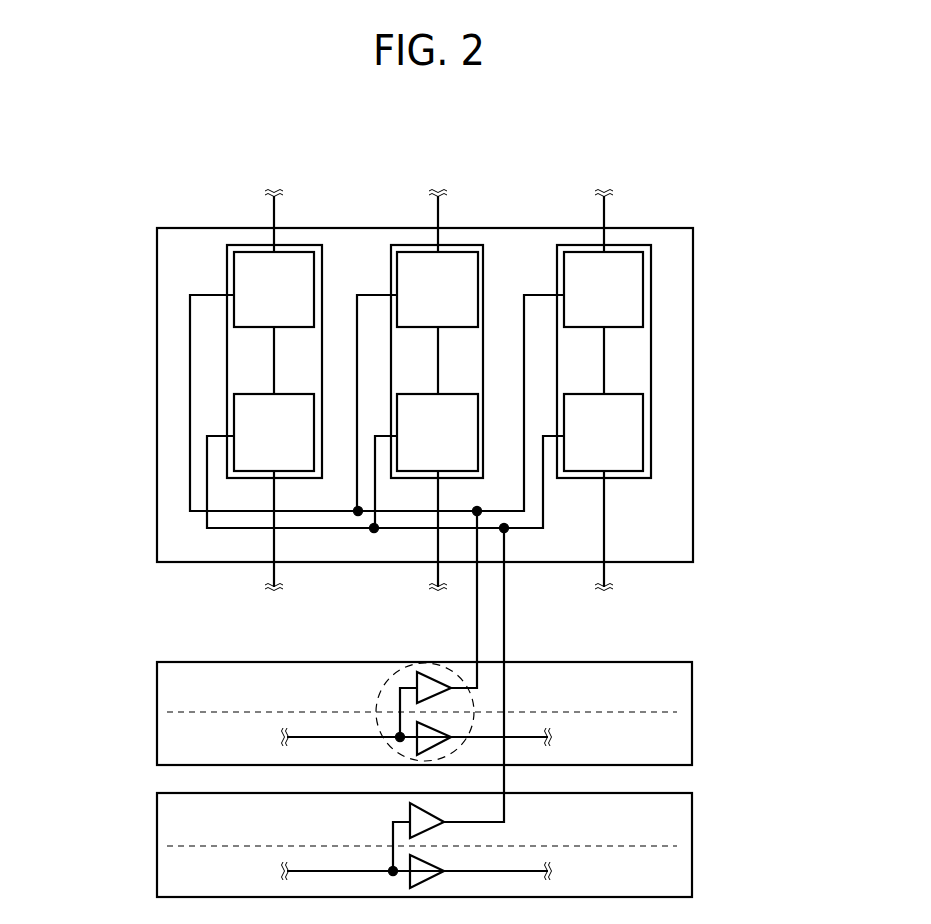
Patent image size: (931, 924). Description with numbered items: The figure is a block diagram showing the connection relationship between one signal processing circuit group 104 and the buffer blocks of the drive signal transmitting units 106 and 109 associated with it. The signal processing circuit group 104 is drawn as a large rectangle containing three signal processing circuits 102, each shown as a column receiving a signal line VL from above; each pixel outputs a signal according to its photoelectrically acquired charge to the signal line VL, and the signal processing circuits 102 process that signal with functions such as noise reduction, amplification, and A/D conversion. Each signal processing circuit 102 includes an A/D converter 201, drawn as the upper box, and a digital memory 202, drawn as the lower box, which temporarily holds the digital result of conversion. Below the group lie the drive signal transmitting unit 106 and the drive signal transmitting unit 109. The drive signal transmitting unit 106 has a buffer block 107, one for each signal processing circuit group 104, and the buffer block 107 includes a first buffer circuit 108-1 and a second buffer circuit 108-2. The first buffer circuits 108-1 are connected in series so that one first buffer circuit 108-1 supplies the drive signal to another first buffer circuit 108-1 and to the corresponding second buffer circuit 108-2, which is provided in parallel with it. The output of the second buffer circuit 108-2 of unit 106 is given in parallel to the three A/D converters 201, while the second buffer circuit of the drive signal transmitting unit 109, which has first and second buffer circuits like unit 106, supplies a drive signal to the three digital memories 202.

The signal processing circuit 102 is at (227, 249).
The signal processing circuit group 104 is at (157, 292).
The A/D converter 201 is at (643, 283).
The digital memory 202 is at (643, 427).
The drive signal transmitting unit 106 is at (692, 682).
The buffer block 107 is at (470, 697).
The first buffer circuit 108-1 is at (398, 732).
The second buffer circuit 108-2 is at (430, 672).
The drive signal transmitting unit 109 is at (692, 822).
The signal line VL is at (278, 186).